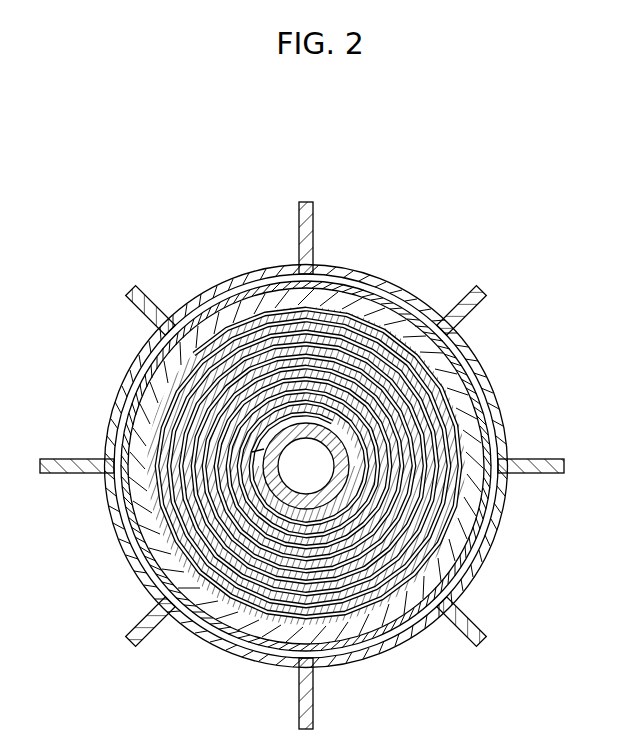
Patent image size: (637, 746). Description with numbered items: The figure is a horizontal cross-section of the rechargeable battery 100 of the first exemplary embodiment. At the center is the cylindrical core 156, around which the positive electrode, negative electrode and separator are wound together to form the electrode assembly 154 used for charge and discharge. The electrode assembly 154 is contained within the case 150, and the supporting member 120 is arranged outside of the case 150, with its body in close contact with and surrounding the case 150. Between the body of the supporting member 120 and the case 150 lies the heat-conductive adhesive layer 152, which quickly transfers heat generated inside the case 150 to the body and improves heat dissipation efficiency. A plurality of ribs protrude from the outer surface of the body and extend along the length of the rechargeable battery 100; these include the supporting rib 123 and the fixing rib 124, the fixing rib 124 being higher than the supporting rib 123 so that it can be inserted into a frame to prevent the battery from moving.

The rechargeable battery 100 is at (505, 210).
The supporting member 120 is at (233, 273).
The supporting rib 123 is at (170, 316).
The fixing rib 124 is at (300, 218).
The case 150 is at (370, 312).
The heat-conductive adhesive layer 152 is at (348, 287).
The electrode assembly 154 is at (432, 408).
The cylindrical core 156 is at (310, 427).